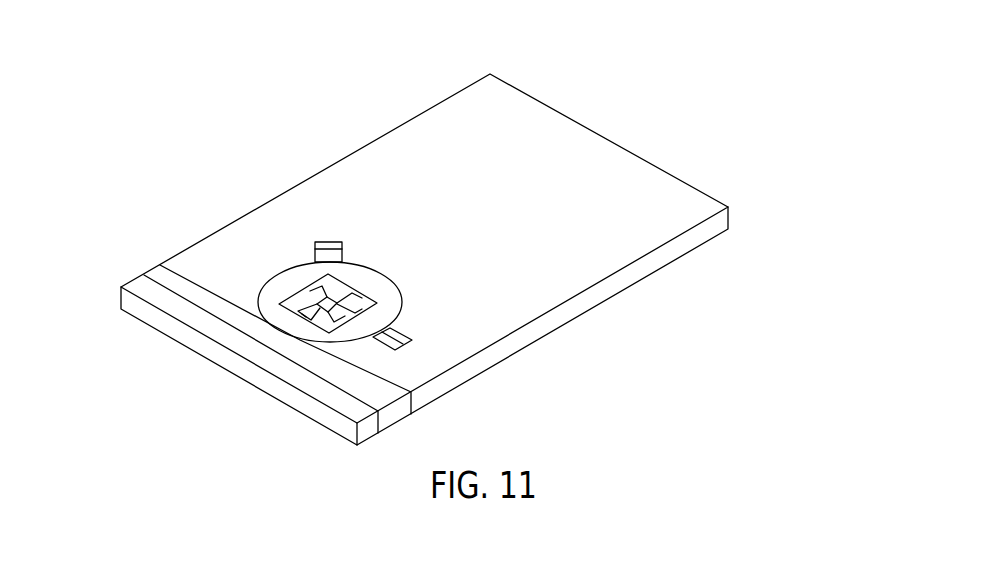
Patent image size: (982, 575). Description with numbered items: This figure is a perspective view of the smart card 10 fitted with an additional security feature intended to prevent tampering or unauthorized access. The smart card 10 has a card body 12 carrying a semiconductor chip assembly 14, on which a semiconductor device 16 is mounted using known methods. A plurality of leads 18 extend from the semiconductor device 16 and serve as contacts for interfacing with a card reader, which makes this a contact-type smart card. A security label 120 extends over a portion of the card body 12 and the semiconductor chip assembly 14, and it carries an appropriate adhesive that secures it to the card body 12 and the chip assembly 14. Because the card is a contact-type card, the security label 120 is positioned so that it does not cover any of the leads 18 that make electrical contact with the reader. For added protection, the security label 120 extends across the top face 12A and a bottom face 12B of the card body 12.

The smart card 10 is at (408, 229).
The card body 12 is at (662, 183).
The top face 12A is at (562, 122).
The bottom face 12B is at (553, 331).
The semiconductor chip assembly 14 is at (380, 284).
The semiconductor device 16 is at (320, 298).
The leads 18 is at (338, 282).
The security label 120 is at (161, 265).